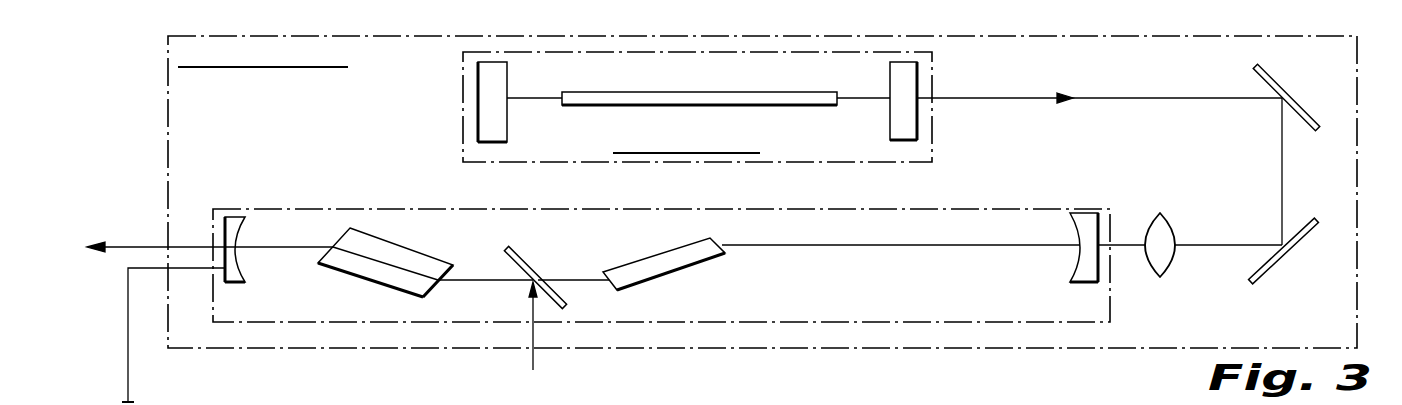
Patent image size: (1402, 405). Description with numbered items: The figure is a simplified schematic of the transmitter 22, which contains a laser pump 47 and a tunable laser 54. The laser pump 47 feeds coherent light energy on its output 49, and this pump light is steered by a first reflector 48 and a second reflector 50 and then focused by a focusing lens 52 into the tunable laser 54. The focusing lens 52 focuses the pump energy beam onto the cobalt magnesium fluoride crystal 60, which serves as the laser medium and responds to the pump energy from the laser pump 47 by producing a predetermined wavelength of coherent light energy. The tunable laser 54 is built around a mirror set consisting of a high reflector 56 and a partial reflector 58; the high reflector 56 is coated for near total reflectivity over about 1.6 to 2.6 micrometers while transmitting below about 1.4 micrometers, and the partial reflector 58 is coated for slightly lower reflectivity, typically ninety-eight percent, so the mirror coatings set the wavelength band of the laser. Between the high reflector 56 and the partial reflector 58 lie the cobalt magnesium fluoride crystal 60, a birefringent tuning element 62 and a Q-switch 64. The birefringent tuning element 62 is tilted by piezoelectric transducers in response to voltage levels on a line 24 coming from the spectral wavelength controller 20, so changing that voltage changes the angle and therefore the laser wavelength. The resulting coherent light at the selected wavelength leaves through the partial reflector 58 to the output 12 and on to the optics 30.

The transmitter 22 is at (168, 133).
The laser pump 47 is at (632, 163).
The reflector 48 is at (507, 90).
The partial reflector 58 is at (890, 80).
The output 49 is at (1130, 68).
The tunable laser 54 is at (1007, 196).
The output 12 is at (195, 246).
The optics 30 is at (192, 335).
The Q-switch 64 is at (407, 258).
The birefringent tuning element 62 is at (526, 258).
The line 24 is at (535, 343).
The spectral wavelength controller 20 is at (925, 366).
The cobalt magnesium fluoride crystal 60 is at (615, 268).
The high reflector 56 is at (1070, 264).
The focusing lens 52 is at (1167, 253).
The reflector 50 is at (1284, 248).